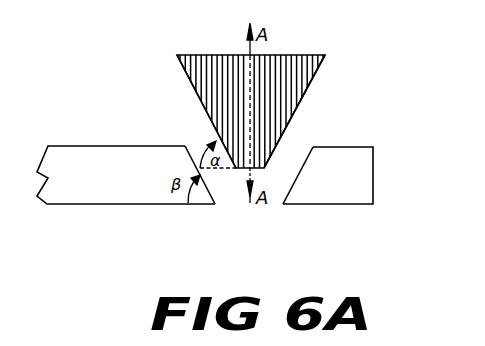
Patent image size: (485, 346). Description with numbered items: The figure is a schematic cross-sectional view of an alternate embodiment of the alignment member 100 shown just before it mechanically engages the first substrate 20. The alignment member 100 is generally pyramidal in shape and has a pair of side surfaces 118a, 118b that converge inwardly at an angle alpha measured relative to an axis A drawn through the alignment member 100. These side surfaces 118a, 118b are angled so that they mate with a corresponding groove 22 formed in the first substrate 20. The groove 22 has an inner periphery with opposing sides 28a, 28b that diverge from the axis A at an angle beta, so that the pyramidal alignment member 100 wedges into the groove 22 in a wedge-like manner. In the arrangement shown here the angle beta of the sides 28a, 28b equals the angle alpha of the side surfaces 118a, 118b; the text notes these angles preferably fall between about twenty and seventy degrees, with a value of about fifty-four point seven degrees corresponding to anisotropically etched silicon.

The alignment member 100 is at (180, 57).
The side surface 118a is at (200, 102).
The side surface 118b is at (302, 102).
The first substrate 20 is at (108, 185).
The groove 22 is at (283, 163).
The opposing side 28a is at (196, 160).
The opposing side 28b is at (305, 160).